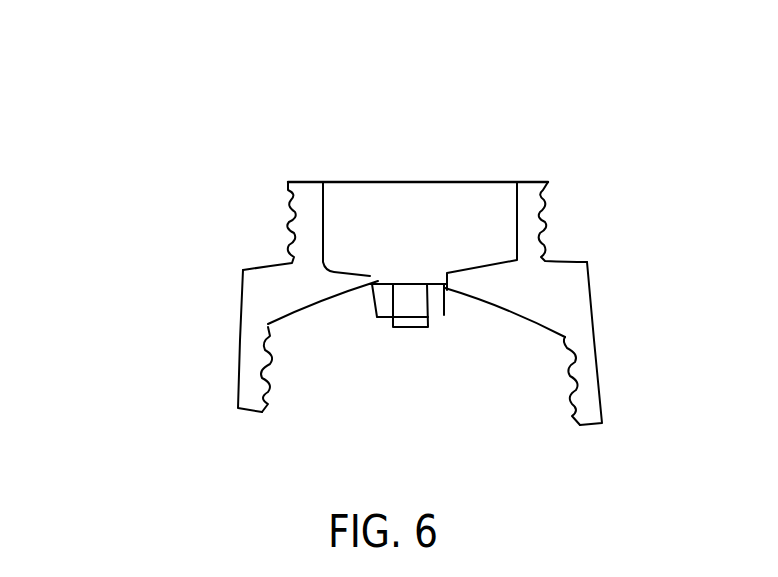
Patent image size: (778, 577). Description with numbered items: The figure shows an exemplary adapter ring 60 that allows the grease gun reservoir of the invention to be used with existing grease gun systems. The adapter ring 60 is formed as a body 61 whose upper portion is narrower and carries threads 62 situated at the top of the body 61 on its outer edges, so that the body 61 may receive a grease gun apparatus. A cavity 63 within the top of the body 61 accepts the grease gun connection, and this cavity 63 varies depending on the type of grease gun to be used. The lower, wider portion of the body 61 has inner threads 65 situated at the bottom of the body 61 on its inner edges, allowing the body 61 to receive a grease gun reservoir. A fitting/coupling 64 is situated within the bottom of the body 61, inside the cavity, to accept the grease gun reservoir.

The adapter ring 60 is at (52, 53).
The body 61 is at (234, 330).
The threads 62 is at (565, 217).
The cavity 63 is at (407, 148).
The fitting/coupling 64 is at (438, 315).
The inner threads 65 is at (288, 375).